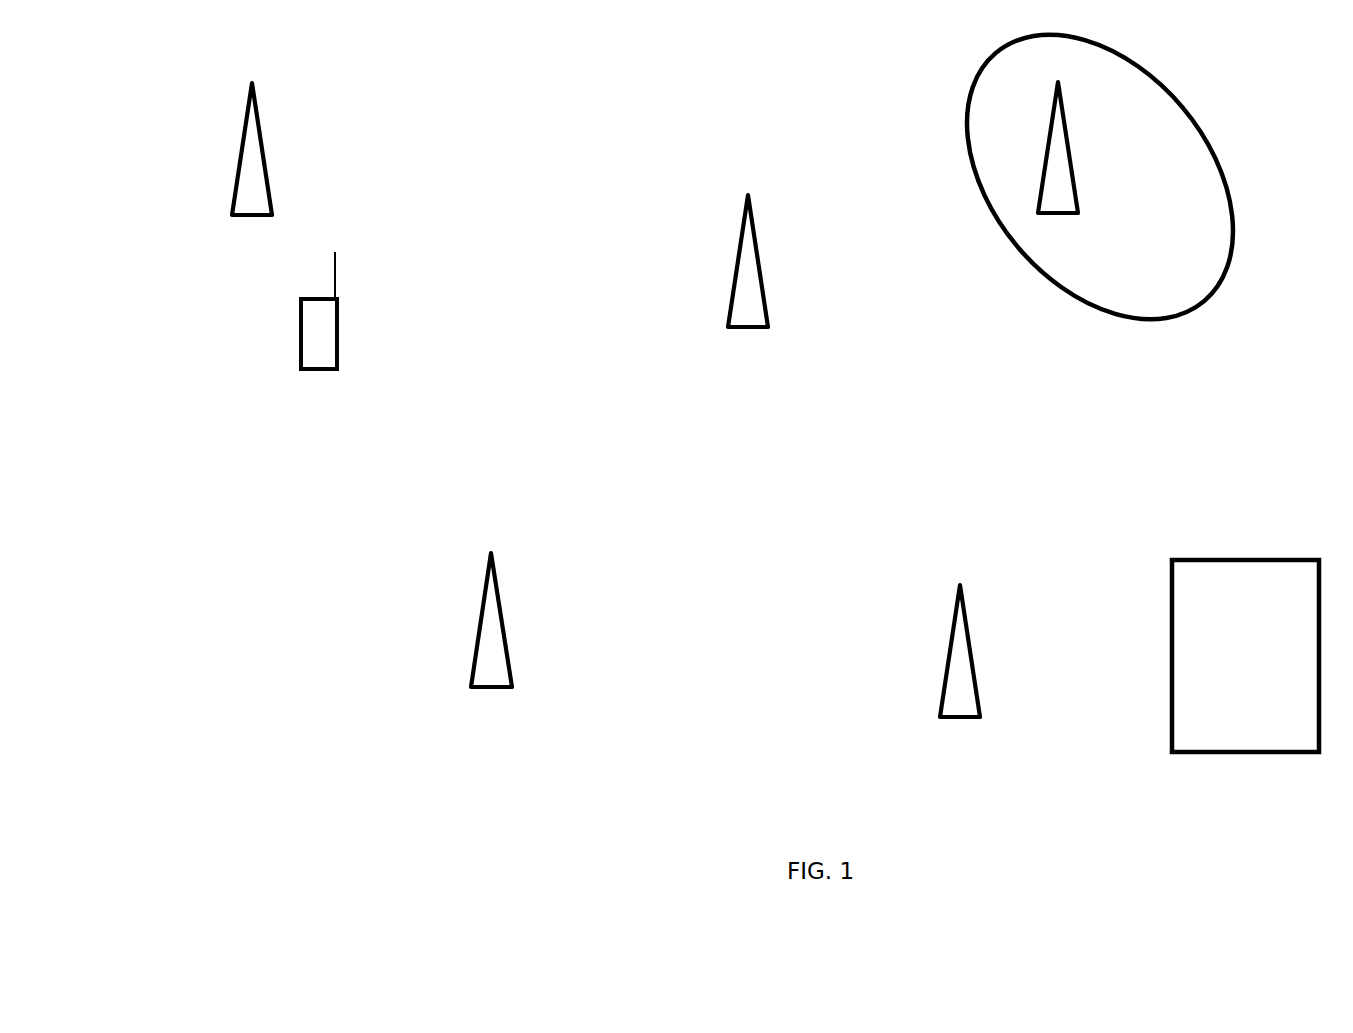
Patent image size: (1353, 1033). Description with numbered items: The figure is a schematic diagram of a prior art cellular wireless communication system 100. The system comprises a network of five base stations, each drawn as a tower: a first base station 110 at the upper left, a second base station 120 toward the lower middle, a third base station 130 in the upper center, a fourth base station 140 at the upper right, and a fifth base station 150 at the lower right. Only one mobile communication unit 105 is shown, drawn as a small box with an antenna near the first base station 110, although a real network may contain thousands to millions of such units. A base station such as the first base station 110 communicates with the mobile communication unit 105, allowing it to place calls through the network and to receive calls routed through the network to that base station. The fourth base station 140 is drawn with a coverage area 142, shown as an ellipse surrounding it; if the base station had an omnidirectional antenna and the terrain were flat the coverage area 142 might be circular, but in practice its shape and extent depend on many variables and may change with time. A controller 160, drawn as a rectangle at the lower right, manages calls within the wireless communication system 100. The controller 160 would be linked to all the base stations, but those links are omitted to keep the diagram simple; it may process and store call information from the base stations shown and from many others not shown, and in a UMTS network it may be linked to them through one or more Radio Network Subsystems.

The wireless communication system 100 is at (653, 75).
The mobile communication unit 105 is at (338, 335).
The base station BS1 110 is at (268, 150).
The base station BS2 120 is at (500, 597).
The base station BS3 130 is at (735, 252).
The base station BS4 140 is at (1038, 135).
The coverage area 142 is at (1208, 137).
The base station BS5 150 is at (950, 635).
The controller 160 is at (1170, 637).